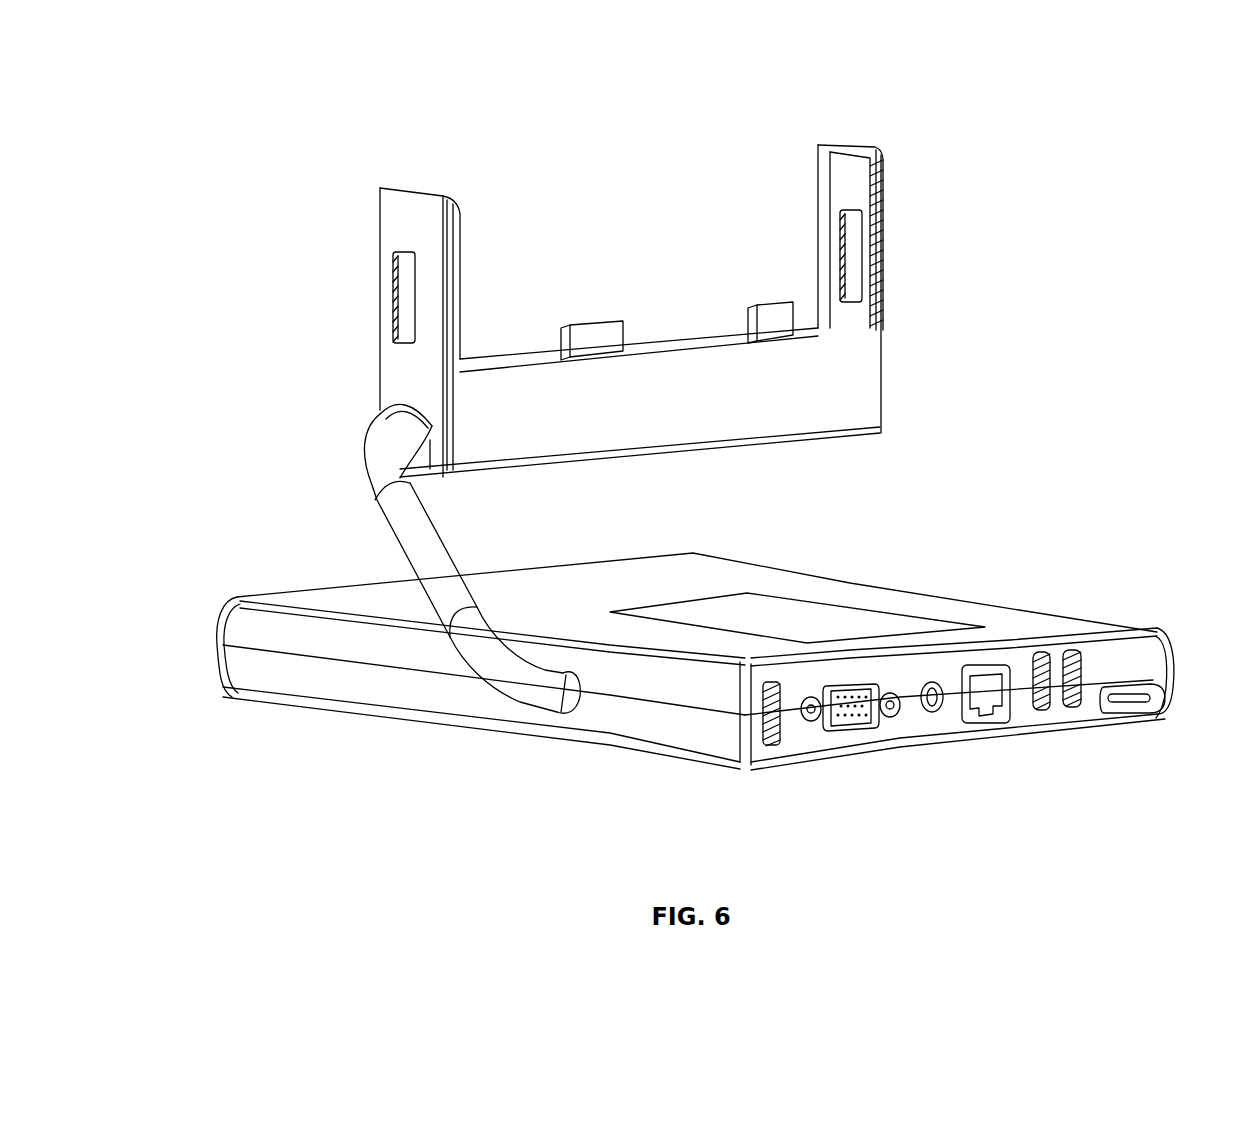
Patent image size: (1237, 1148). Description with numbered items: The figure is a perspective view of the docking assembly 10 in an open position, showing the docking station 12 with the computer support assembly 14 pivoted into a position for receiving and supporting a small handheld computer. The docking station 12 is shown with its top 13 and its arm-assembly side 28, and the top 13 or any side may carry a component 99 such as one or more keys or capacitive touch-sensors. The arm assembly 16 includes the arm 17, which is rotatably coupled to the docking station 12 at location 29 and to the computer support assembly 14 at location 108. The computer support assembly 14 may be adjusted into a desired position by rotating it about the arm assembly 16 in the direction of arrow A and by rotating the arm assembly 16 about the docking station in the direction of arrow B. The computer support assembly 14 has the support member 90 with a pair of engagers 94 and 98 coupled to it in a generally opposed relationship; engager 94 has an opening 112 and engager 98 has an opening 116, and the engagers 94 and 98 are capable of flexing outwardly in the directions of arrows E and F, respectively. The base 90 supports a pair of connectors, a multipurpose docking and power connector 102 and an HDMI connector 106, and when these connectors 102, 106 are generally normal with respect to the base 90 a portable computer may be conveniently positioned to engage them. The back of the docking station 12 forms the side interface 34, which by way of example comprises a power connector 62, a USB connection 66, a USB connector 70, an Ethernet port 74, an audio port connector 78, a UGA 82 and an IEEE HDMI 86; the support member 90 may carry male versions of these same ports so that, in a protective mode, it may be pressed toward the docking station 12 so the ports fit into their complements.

The docking assembly 10 is at (300, 107).
The docking station 12 is at (906, 571).
The top 13 is at (697, 607).
The computer support assembly 14 is at (906, 326).
The arm assembly 16 is at (484, 683).
The arm 17 is at (484, 603).
The arm-assembly side 28 is at (451, 703).
The location 29 is at (560, 717).
The side interface 34 is at (980, 727).
The power connector 62 is at (1130, 705).
The USB connection 66 is at (1082, 710).
The USB connector 70 is at (1045, 710).
The Ethernet port 74 is at (985, 700).
The audio port connector 78 is at (938, 710).
The UGA 82 is at (862, 722).
The IEEE HDMI 86 is at (775, 745).
The support member 90 is at (676, 440).
The engager 94 is at (391, 332).
The engager 98 is at (850, 237).
The component 99 is at (768, 633).
The multipurpose connector 102 is at (593, 347).
The HDMI connector 106 is at (783, 327).
The location 108 is at (400, 398).
The opening 112 is at (403, 295).
The opening 116 is at (848, 255).